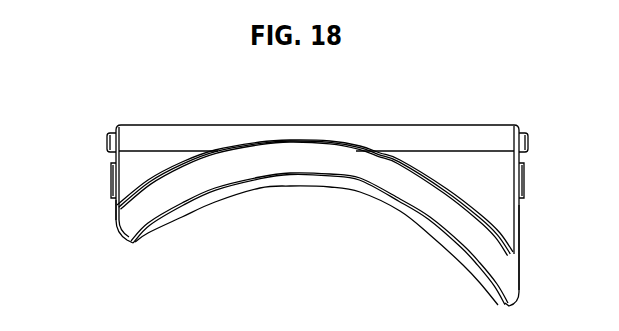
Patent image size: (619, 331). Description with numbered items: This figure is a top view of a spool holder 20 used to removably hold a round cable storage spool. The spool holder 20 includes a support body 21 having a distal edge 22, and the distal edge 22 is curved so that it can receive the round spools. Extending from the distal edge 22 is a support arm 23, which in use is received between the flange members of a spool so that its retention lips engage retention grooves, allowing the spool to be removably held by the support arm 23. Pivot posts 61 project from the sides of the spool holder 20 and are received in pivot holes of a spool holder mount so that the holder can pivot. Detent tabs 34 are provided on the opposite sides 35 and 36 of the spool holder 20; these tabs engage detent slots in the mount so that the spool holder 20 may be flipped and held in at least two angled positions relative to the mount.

The spool holder 20 is at (437, 107).
The support body 21 is at (462, 167).
The distal edge 22 is at (322, 143).
The support arm 23 is at (400, 183).
The detent tab 34 is at (110, 180).
The side 35 is at (520, 228).
The side 36 is at (115, 207).
The pivot post 61 is at (106, 141).